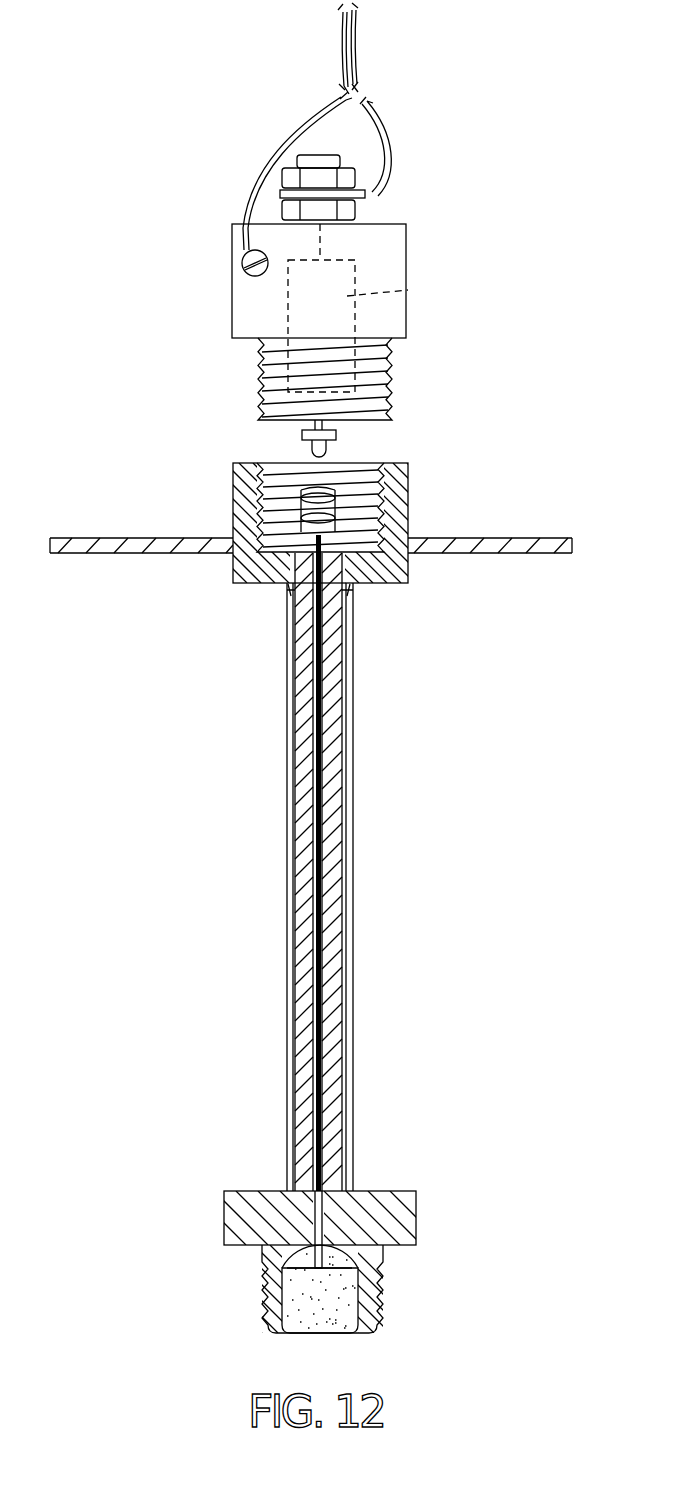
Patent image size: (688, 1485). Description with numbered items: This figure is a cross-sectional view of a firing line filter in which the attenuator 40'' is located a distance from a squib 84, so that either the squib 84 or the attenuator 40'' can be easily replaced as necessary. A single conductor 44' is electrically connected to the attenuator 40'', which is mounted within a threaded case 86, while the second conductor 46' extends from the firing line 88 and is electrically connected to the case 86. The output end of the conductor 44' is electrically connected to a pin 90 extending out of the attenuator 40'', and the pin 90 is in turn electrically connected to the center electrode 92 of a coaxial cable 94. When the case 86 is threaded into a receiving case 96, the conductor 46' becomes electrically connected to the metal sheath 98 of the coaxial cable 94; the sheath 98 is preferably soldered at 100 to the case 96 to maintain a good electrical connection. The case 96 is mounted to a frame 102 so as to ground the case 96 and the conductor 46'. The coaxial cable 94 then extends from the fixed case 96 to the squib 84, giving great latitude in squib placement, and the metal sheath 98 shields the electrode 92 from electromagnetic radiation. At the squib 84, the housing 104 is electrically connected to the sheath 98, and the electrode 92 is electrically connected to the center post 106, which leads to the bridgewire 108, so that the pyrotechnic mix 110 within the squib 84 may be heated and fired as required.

The firing line 88 is at (390, 46).
The second conductor 46' is at (257, 171).
The single conductor 44' is at (417, 146).
The threaded case 86 is at (401, 252).
The attenuator 40'' is at (413, 308).
The pin 90 is at (330, 448).
The receiving case 96 is at (245, 490).
The center electrode 92 is at (340, 500).
The frame 102 is at (123, 535).
The solder joint 100 is at (282, 588).
The metal sheath 98 is at (287, 655).
The coaxial cable 94 is at (400, 744).
The housing 104 is at (400, 1195).
The squib 84 is at (456, 1245).
The center post 106 is at (318, 1232).
The bridgewire 108 is at (290, 1275).
The pyrotechnic mix 110 is at (345, 1310).